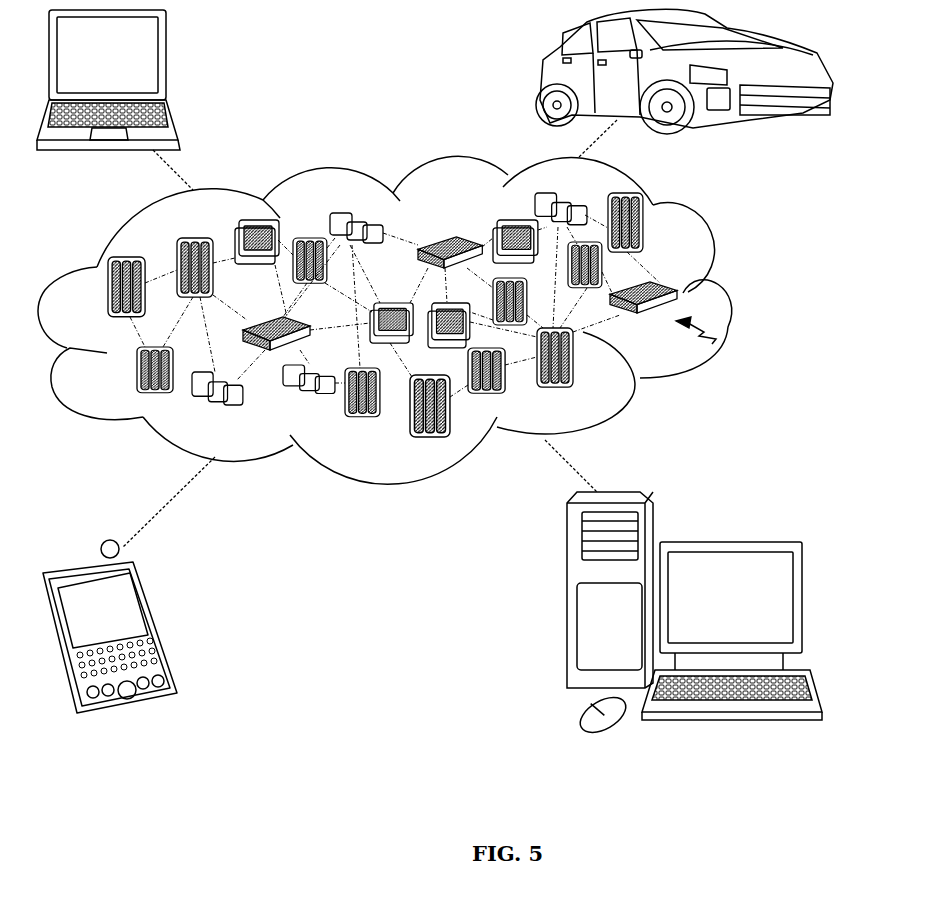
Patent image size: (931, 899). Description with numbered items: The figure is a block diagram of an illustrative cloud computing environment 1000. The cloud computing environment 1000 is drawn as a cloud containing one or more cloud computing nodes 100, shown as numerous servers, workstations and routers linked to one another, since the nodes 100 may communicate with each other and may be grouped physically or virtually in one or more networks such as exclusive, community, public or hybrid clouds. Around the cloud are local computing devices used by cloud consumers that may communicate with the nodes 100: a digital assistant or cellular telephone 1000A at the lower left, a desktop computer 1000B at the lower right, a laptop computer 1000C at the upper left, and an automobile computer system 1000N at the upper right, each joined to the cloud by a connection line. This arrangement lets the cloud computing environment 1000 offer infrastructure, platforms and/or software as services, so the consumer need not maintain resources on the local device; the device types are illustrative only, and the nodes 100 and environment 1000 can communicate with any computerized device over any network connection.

The cloud computing nodes 100 is at (712, 338).
The cloud computing environment 1000 is at (730, 293).
The digital assistant (PDA) or cellular telephone 1000A is at (162, 620).
The desktop computer 1000B is at (727, 540).
The laptop computer 1000C is at (168, 62).
The automobile computer system 1000N is at (538, 78).